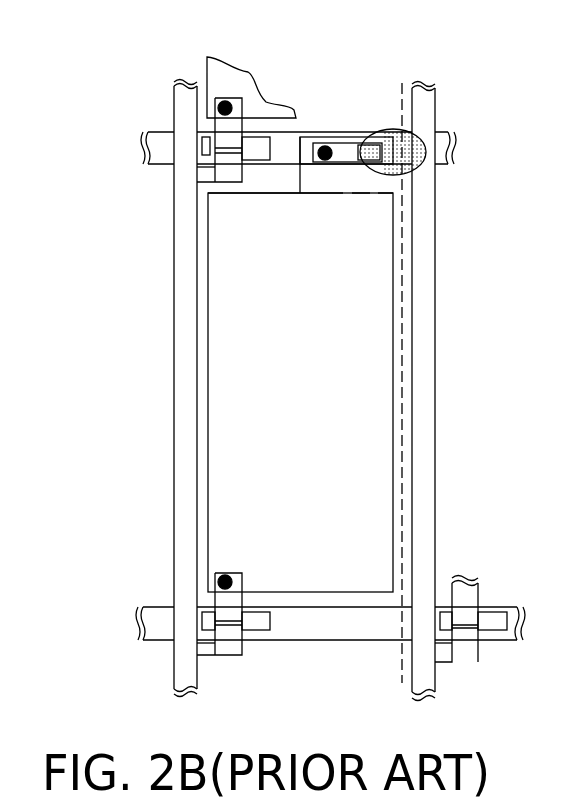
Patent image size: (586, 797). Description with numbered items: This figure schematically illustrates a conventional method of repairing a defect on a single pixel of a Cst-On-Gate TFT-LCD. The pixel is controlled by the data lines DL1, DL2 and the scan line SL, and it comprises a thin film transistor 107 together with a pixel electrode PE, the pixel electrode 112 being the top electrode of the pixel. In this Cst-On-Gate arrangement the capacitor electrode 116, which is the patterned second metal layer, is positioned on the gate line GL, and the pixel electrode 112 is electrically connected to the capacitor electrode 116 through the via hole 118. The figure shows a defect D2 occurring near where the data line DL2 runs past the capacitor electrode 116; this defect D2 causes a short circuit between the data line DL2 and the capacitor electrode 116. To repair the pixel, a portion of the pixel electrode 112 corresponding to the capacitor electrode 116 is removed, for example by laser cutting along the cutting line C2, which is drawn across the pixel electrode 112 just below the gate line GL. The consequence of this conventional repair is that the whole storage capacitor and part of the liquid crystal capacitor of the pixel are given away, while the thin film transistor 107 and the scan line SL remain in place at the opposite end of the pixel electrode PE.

The data line DL1 is at (186, 80).
The data line DL2 is at (416, 84).
The gate line GL is at (141, 143).
The scan line SL is at (141, 617).
The pixel electrode PE is at (297, 392).
The pixel electrode 112 is at (365, 287).
The capacitor electrode 116 is at (350, 152).
The via hole 118 is at (326, 147).
The defect D2 is at (420, 164).
The cutting line C2 is at (364, 197).
The thin film transistor 107 is at (242, 622).